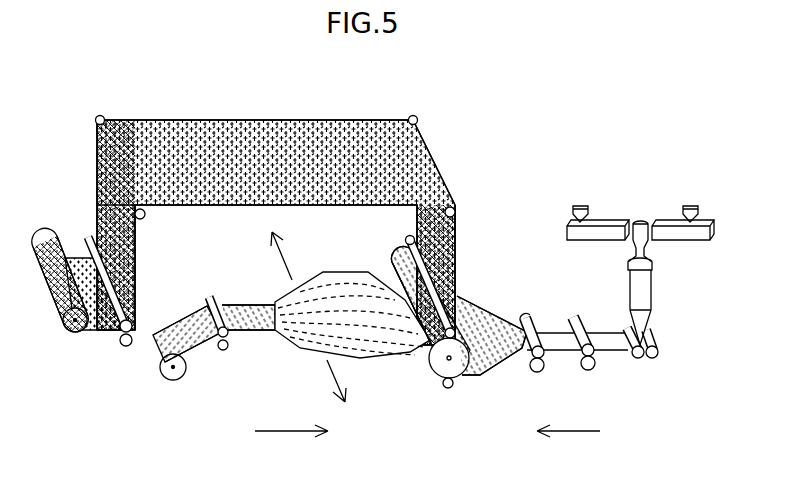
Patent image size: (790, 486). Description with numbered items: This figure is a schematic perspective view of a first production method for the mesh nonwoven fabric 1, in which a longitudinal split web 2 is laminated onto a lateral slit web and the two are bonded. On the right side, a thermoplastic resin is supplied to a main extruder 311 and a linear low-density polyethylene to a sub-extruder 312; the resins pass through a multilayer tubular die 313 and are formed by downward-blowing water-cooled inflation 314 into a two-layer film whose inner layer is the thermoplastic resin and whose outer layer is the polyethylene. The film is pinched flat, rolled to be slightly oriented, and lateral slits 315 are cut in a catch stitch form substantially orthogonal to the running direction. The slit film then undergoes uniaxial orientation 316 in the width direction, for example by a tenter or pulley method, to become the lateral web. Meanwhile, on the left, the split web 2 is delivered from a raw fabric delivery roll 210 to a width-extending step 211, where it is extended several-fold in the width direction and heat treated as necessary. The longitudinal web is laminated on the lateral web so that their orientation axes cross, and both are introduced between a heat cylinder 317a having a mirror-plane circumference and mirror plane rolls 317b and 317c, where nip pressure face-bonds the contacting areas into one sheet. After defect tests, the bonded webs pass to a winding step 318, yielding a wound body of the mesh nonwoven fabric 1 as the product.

The mesh nonwoven fabric 1 is at (250, 122).
The split web 2 is at (168, 320).
The raw fabric delivery roll 210 is at (171, 381).
The width-extending step 211 is at (352, 315).
The main extruder 311 is at (596, 240).
The sub-extruder 312 is at (705, 215).
The multilayer tubular die 313 is at (640, 220).
The downward-blowing water-cooled inflation 314 is at (645, 290).
The lateral slits 315 is at (548, 355).
The uniaxial orientation 316 is at (470, 377).
The heat cylinder 317a is at (400, 252).
The mirror plane roll 317b is at (410, 236).
The mirror plane roll 317c is at (447, 389).
The winding step 318 is at (70, 325).